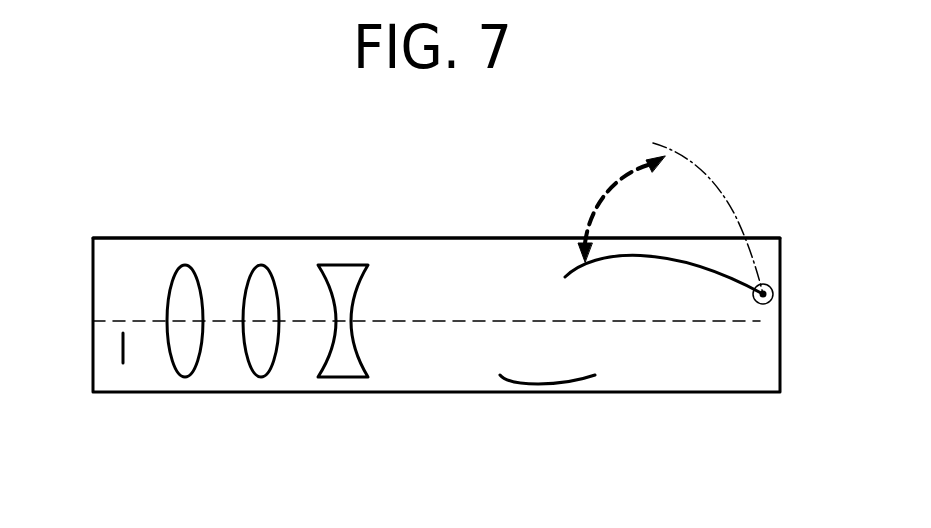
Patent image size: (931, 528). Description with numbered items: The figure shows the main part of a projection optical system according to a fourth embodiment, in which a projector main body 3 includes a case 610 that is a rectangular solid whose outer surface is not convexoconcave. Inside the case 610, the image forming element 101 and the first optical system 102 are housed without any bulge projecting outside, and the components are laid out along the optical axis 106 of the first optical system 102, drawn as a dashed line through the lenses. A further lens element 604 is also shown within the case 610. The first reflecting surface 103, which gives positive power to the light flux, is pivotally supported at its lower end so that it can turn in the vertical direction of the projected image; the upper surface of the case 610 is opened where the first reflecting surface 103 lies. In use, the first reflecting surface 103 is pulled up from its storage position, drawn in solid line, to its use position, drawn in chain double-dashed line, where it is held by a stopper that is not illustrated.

The projector main body 3 is at (420, 229).
The image forming element 101 is at (123, 349).
The first optical system 102 is at (373, 408).
The first reflecting surface 103 is at (735, 215).
The optical axis 106 is at (702, 322).
The lens 604 is at (542, 385).
The case 610 is at (145, 238).